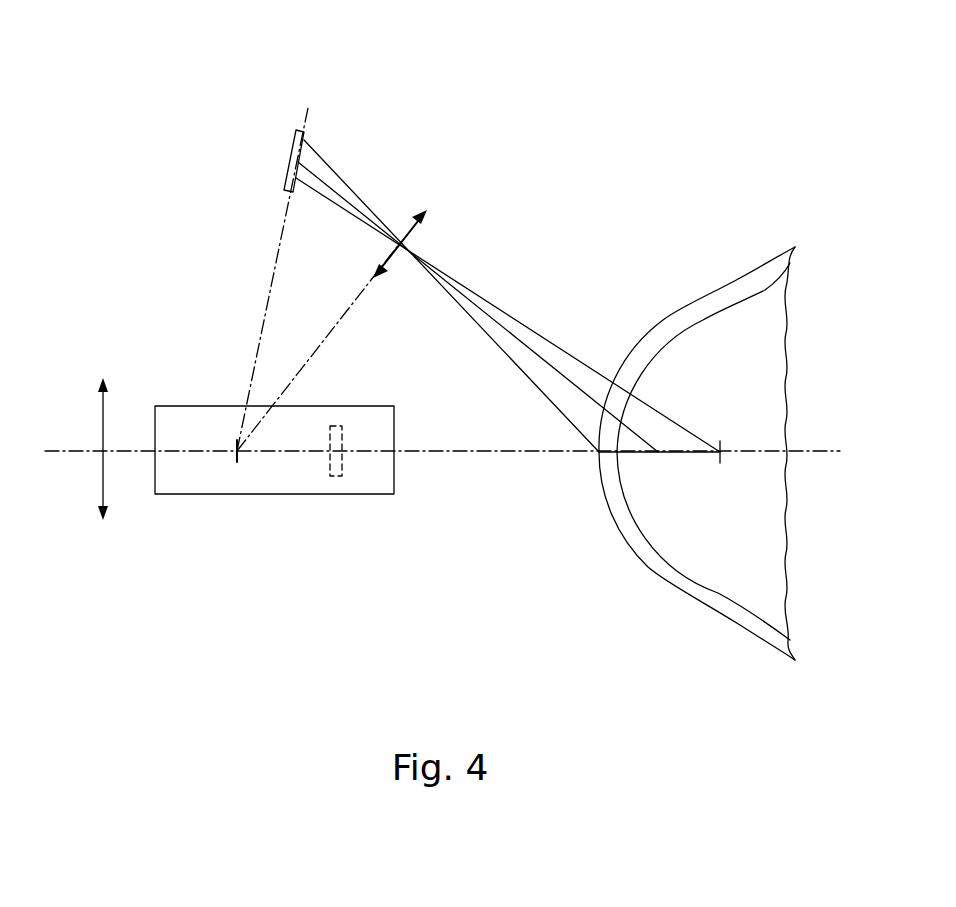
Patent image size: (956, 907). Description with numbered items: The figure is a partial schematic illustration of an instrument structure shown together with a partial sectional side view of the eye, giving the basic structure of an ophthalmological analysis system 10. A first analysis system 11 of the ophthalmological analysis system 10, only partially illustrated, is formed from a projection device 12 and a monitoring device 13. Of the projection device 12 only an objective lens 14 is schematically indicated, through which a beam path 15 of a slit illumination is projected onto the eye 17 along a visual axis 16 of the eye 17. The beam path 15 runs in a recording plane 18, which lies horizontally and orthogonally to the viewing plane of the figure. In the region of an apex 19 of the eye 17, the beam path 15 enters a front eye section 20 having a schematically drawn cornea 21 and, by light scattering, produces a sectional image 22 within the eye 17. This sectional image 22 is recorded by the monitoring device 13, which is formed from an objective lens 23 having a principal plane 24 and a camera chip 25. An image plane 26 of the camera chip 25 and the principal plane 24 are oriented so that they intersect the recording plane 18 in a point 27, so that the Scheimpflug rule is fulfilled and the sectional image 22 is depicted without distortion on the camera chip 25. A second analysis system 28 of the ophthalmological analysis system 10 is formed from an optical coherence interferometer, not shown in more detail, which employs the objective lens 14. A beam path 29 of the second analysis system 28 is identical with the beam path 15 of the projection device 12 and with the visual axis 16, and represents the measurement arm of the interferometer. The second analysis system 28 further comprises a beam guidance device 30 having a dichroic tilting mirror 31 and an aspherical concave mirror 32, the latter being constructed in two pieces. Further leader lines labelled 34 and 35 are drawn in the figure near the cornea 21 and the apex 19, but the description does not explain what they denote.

The ophthalmological analysis system 10 is at (155, 96).
The first analysis system 11 is at (280, 93).
The projection device 12 is at (78, 393).
The monitoring device 13 is at (350, 166).
The objective lens 14 is at (100, 523).
The beam path 15 is at (113, 448).
The visual axis 16 is at (768, 452).
The eye 17 is at (733, 273).
The recording plane 18 is at (622, 453).
The apex 19 is at (598, 453).
The front eye section 20 is at (683, 298).
The cornea 21 is at (717, 605).
The sectional image 22 is at (690, 453).
The objective lens 23 is at (418, 201).
The principal plane 24 is at (345, 313).
The camera chip 25 is at (292, 138).
The image plane 26 is at (280, 248).
The point 27 is at (242, 456).
The second analysis system 28 is at (275, 627).
The beam path 29 is at (128, 452).
The beam guidance device 30 is at (335, 503).
The dichroic tilting mirror 31 is at (340, 474).
The aspherical concave mirror 32 is at (228, 498).
The contact surface 34 is at (650, 334).
The reflected beam 35 is at (643, 453).